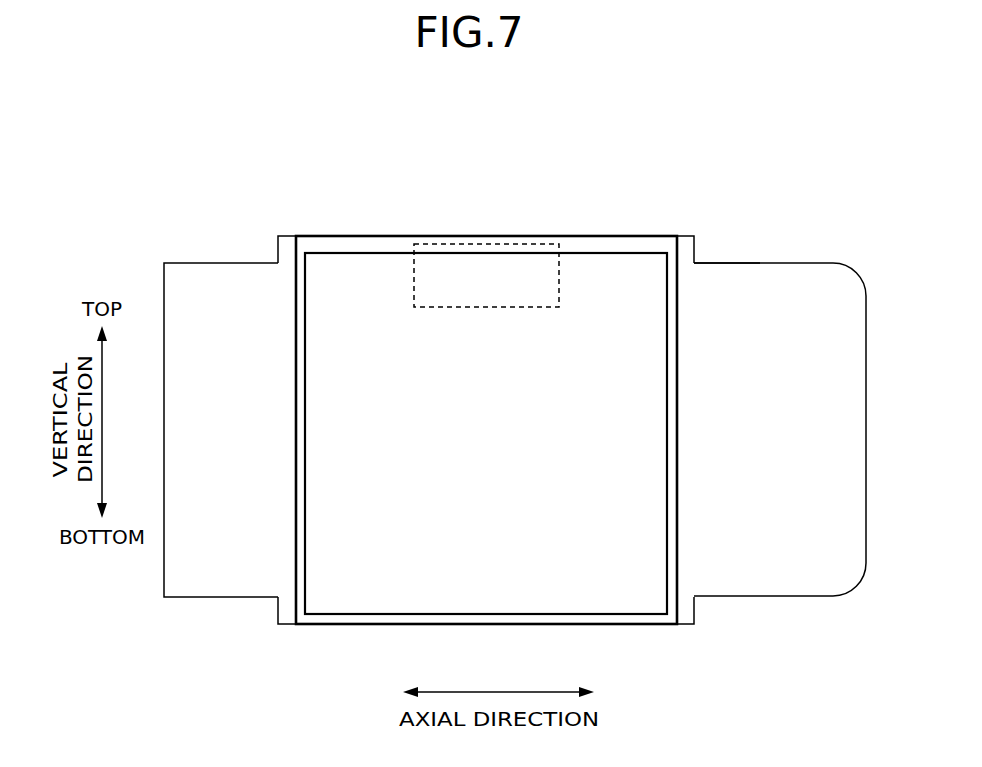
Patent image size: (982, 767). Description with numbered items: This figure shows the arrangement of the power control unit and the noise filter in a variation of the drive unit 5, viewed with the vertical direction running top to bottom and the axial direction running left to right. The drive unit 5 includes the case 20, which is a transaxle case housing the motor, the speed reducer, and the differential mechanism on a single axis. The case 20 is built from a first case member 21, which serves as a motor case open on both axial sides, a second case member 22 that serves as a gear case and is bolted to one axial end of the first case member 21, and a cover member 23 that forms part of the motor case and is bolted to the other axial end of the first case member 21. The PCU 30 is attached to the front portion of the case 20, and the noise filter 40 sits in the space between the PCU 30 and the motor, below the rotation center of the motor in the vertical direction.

The drive unit 5 is at (505, 159).
The case 20 is at (809, 259).
The first case member 21 is at (636, 236).
The second case member 22 is at (732, 263).
The cover member 23 is at (218, 263).
The power control unit (PCU) 30 is at (363, 253).
The noise filter 40 is at (560, 275).